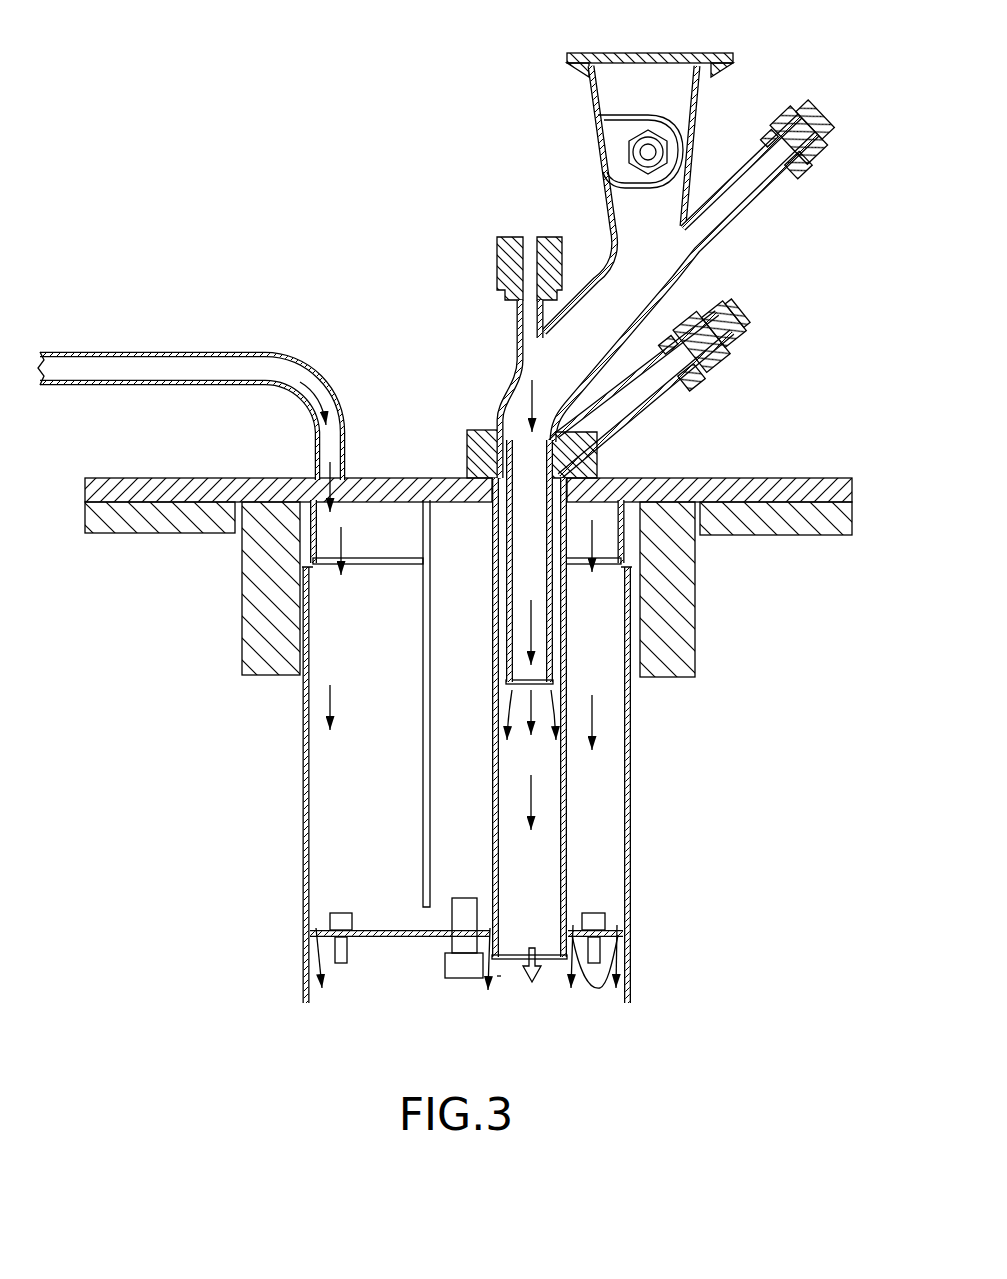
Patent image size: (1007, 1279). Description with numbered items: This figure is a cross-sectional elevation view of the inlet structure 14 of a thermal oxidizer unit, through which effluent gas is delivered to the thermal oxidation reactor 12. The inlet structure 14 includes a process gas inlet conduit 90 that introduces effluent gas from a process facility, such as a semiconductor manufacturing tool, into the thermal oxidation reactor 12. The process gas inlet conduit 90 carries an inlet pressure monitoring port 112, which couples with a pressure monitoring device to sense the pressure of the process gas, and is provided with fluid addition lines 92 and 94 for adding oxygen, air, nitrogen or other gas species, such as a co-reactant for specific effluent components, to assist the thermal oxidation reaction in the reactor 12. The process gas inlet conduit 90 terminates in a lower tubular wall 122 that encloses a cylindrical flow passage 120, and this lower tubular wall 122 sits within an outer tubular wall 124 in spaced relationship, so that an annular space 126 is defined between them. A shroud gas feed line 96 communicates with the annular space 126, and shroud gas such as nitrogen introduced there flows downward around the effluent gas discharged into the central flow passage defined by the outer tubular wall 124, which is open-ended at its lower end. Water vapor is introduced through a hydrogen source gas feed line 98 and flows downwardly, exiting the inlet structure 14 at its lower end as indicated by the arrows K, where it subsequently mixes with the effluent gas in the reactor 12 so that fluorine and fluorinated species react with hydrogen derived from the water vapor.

The thermal oxidation reactor 12 is at (840, 456).
The inlet structure 14 is at (345, 232).
The process gas inlet conduit 90 is at (690, 110).
The fluid addition line 92 is at (497, 262).
The fluid addition line 94 is at (746, 209).
The shroud gas feed line 96 is at (650, 402).
The hydrogen source gas feed line 98 is at (192, 353).
The inlet pressure monitoring port 112 is at (643, 152).
The cylindrical flow passage 120 is at (528, 549).
The lower tubular wall 122 is at (508, 595).
The outer tubular wall 124 is at (495, 757).
The annular space 126 is at (500, 655).